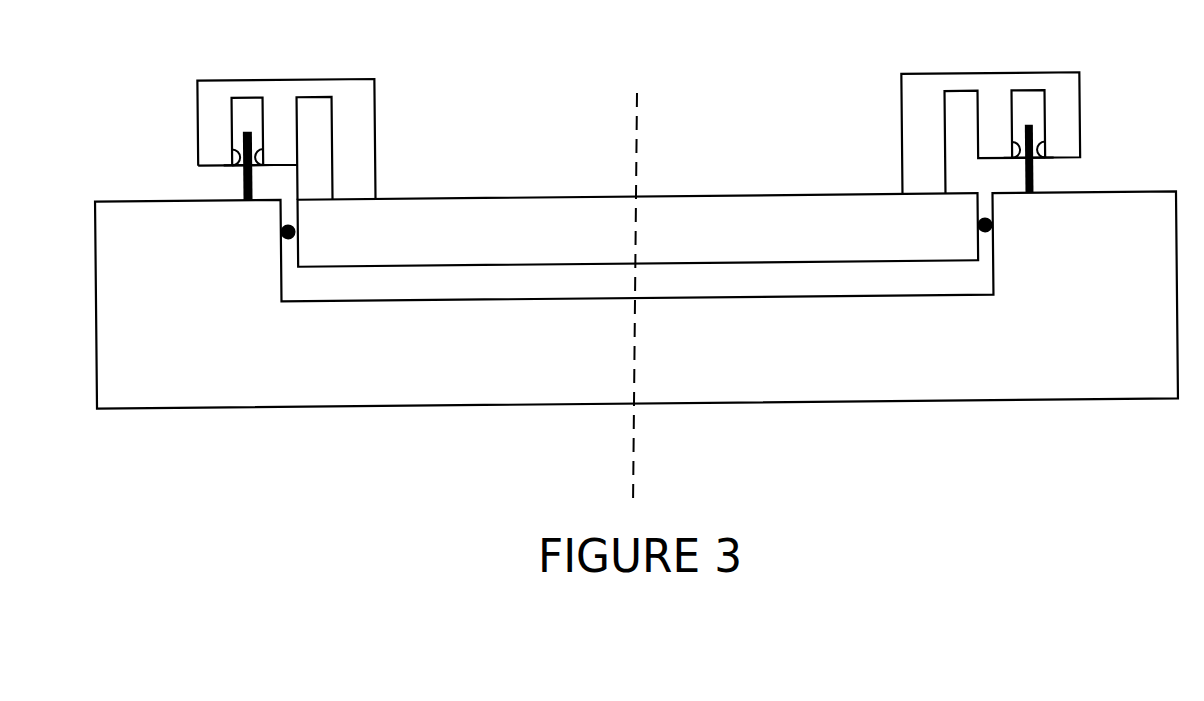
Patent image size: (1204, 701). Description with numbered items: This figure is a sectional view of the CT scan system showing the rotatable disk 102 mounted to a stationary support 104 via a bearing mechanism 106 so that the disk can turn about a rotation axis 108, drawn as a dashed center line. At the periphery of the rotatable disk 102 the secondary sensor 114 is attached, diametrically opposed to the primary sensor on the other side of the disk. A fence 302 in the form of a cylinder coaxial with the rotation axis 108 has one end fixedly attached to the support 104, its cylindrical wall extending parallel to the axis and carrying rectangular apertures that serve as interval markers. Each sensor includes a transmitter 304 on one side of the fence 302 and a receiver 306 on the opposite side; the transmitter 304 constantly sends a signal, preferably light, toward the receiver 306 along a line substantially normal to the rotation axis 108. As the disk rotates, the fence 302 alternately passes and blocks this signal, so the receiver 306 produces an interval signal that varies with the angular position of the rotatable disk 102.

The rotatable disk 102 is at (825, 245).
The support 104 is at (1128, 210).
The bearing mechanism 106 is at (288, 240).
The rotation axis 108 is at (635, 420).
The secondary sensor 114 is at (928, 107).
The fence 302 is at (250, 132).
The transmitter 304 is at (240, 163).
The receiver 306 is at (260, 147).